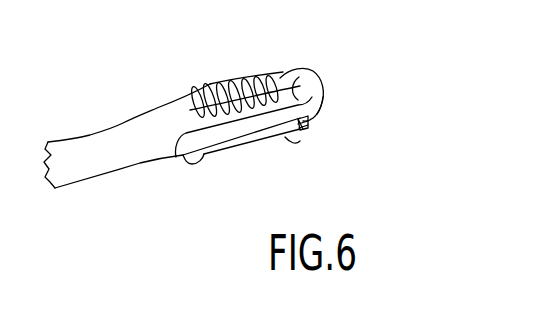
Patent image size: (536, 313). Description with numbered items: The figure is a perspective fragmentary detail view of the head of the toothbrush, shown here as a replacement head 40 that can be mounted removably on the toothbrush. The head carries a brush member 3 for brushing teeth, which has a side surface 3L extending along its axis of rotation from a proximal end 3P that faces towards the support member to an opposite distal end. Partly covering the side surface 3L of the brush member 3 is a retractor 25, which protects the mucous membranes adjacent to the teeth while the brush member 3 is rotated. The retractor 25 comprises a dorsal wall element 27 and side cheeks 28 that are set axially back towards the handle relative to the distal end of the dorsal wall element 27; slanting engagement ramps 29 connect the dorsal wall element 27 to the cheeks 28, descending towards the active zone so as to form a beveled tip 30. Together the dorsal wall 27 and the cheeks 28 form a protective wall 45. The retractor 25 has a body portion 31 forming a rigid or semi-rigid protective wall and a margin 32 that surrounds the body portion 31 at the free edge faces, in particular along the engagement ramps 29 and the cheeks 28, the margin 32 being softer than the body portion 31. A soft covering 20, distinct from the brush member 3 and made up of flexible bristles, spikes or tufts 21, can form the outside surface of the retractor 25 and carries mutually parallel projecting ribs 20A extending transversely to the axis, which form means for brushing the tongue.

The replacement head 40 is at (108, 116).
The body portion 31 is at (197, 101).
The side cheeks 28 is at (231, 68).
The projecting ribs 20A is at (236, 130).
The retractor 25 is at (244, 75).
The dorsal wall element 27 is at (268, 71).
The margin 32 is at (299, 79).
The beveled tip 30 is at (331, 65).
The engagement ramps 29 is at (322, 76).
The soft covering 20 is at (311, 117).
The tufts of flexible bristles or spikes 21 is at (300, 141).
The brush member 3 is at (280, 136).
The side surface 3L is at (241, 145).
The proximal end 3P is at (186, 163).
The protective wall 45 is at (213, 118).